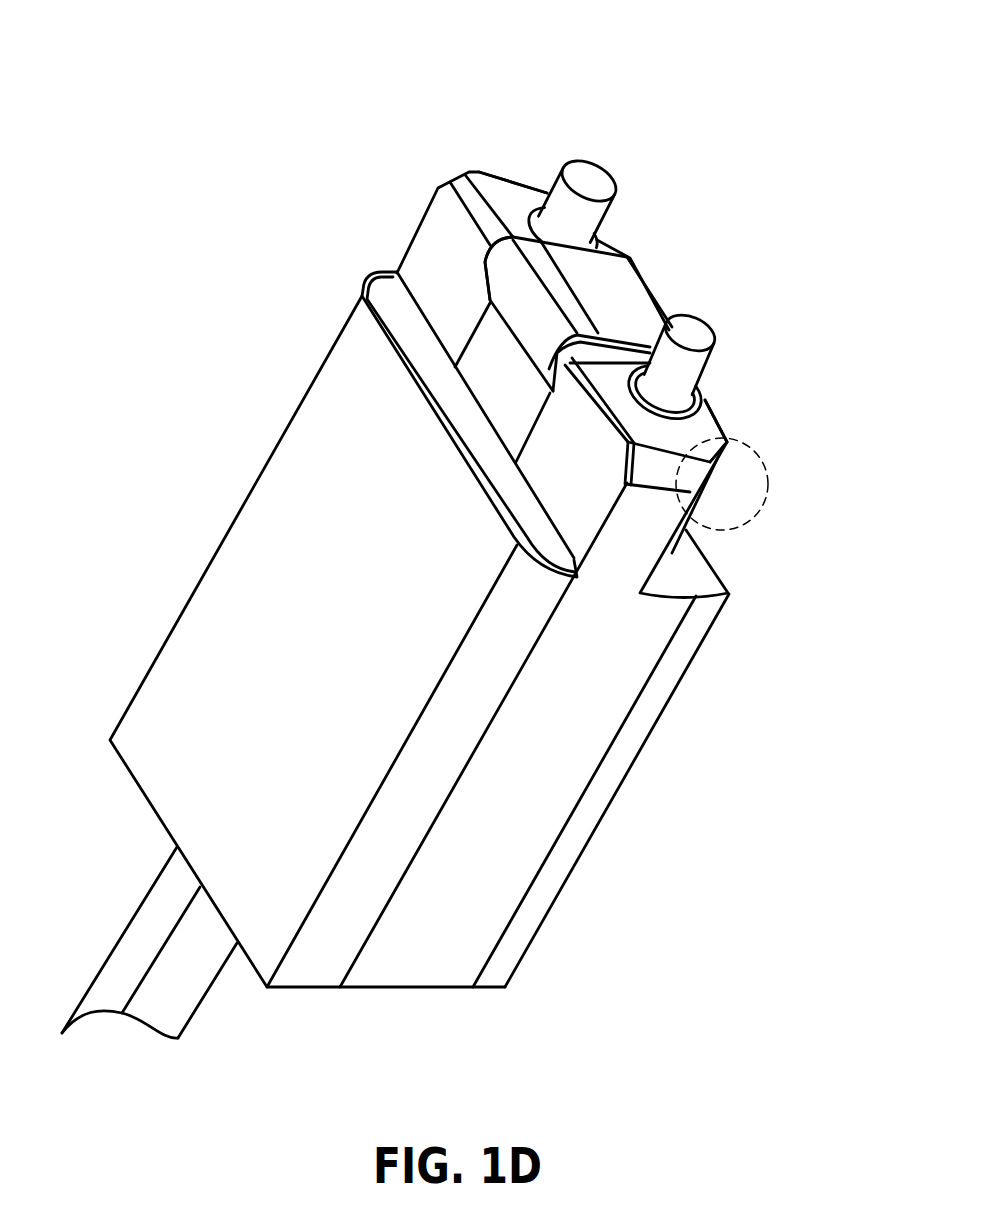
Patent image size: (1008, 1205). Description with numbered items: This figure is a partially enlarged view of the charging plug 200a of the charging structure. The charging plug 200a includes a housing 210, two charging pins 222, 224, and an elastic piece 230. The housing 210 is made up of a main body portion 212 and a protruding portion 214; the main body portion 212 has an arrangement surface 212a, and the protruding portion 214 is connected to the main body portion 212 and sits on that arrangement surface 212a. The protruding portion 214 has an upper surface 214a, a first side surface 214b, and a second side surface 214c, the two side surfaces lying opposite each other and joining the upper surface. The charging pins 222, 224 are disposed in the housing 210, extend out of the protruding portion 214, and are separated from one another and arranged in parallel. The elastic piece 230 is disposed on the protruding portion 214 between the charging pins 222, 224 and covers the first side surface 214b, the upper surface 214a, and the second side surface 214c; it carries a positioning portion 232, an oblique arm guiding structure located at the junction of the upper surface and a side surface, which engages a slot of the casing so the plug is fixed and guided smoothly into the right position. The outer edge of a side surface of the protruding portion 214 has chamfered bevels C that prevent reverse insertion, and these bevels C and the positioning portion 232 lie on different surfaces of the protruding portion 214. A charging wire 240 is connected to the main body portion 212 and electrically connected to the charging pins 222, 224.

The charging plug 200a is at (855, 978).
The housing 210 is at (153, 236).
The main body portion 212 is at (343, 392).
The arrangement surface 212a is at (695, 578).
The protruding portion 214 is at (437, 267).
The upper surface 214a is at (504, 197).
The first side surface 214b is at (457, 215).
The second side surface 214c is at (717, 424).
The charging pin 222 is at (594, 166).
The charging pin 224 is at (700, 332).
The elastic piece 230 is at (620, 285).
The positioning portion 232 is at (490, 267).
The charging wire 240 is at (187, 982).
The chamfered bevel C is at (768, 473).